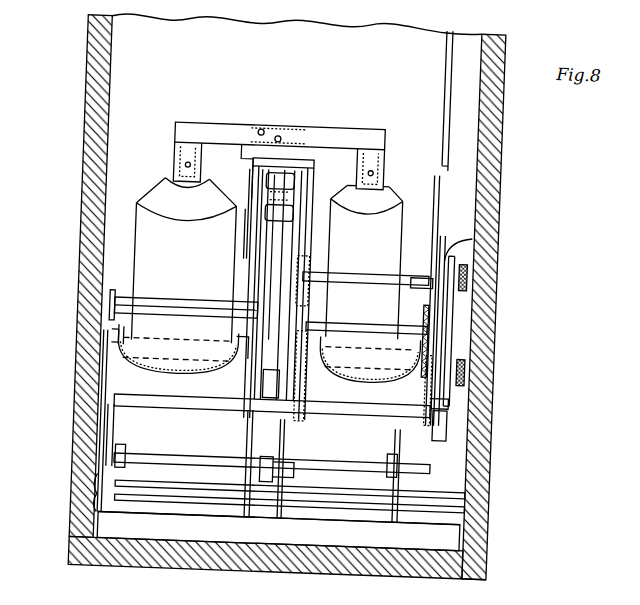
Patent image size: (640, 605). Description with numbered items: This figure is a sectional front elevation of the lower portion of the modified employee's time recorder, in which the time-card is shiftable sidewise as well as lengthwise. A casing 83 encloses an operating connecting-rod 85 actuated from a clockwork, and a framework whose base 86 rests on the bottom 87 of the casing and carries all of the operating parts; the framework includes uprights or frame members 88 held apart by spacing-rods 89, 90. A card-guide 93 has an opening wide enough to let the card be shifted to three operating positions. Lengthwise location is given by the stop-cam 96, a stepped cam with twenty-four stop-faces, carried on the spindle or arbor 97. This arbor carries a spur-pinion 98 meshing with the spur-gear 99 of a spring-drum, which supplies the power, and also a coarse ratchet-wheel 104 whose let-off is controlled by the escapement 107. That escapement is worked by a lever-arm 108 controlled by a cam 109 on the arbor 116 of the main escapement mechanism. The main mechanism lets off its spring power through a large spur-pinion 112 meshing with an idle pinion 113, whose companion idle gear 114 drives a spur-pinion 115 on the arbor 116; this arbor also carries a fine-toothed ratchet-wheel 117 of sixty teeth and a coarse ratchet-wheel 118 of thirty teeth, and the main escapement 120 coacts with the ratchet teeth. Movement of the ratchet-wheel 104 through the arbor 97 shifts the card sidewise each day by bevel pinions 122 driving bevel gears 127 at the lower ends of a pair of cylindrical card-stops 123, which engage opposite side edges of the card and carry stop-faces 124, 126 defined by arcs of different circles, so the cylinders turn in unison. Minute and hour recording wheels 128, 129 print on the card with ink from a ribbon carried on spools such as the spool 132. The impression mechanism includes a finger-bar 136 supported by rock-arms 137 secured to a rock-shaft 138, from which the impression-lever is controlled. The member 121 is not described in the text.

The casing 83 is at (484, 262).
The operating connecting-rod 85 is at (443, 108).
The base of framework 86 is at (278, 532).
The bottom of casing 87 is at (290, 566).
The uprights or frame members 88 is at (118, 482).
The spacing-rod 89 is at (196, 305).
The spacing-rod 90 is at (217, 512).
The card-guide 93 is at (298, 150).
The stop-cam 96 is at (244, 196).
The spindle or arbor 97 is at (242, 362).
The spur-pinion 98 is at (430, 345).
The spur-gear 99 is at (436, 422).
The coarse ratchet-wheel 104 is at (455, 380).
The escapement 107 is at (452, 420).
The lever-arm 108 is at (440, 283).
The cam 109 is at (470, 236).
The large spur-pinion 112 is at (300, 450).
The idle pinion 113 is at (320, 318).
The idle gear 114 is at (310, 292).
The spur-pinion 115 is at (367, 307).
The arbor 116 is at (365, 262).
The fine-toothed ratchet-wheel 117 is at (455, 236).
The coarse ratchet-wheel 118 is at (440, 232).
The escapement 120 is at (440, 325).
The rod 121 is at (440, 186).
The bevel pinion 122 is at (120, 345).
The card-stop 123 is at (360, 160).
The stop-face 124 is at (184, 260).
The stop-face 126 is at (307, 216).
The bevel gear 127 is at (168, 376).
The recording wheel 128 is at (284, 238).
The recording wheel 129 is at (266, 240).
The spool 132 is at (279, 383).
The finger-bar 136 is at (210, 412).
The rock-arm 137 is at (120, 430).
The rock-shaft 138 is at (212, 468).